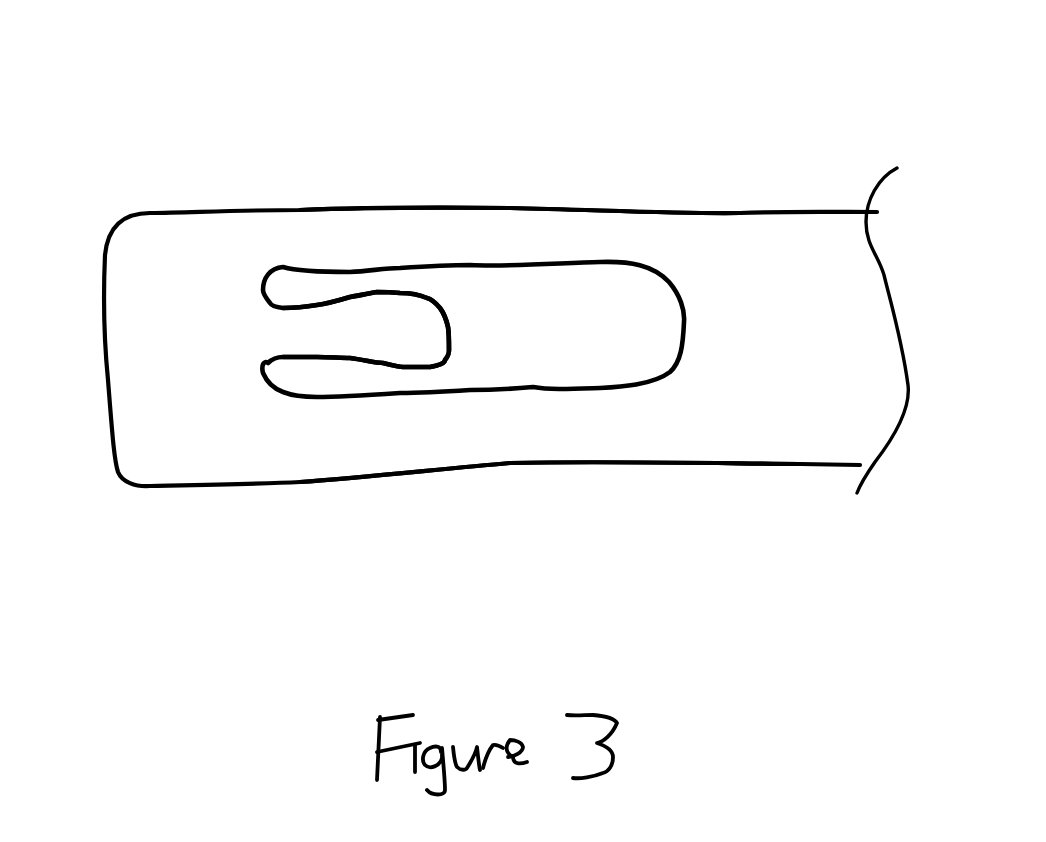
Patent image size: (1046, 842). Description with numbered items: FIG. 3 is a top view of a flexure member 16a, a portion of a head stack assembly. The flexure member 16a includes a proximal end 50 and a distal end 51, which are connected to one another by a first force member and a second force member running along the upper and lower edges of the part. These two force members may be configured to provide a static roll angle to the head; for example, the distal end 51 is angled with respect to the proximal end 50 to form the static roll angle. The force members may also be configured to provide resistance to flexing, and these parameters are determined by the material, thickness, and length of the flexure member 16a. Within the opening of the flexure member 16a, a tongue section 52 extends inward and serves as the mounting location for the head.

The flexure member 16a is at (543, 67).
The proximal end 50 is at (775, 245).
The distal end 51 is at (133, 285).
The tongue section 52 is at (322, 327).